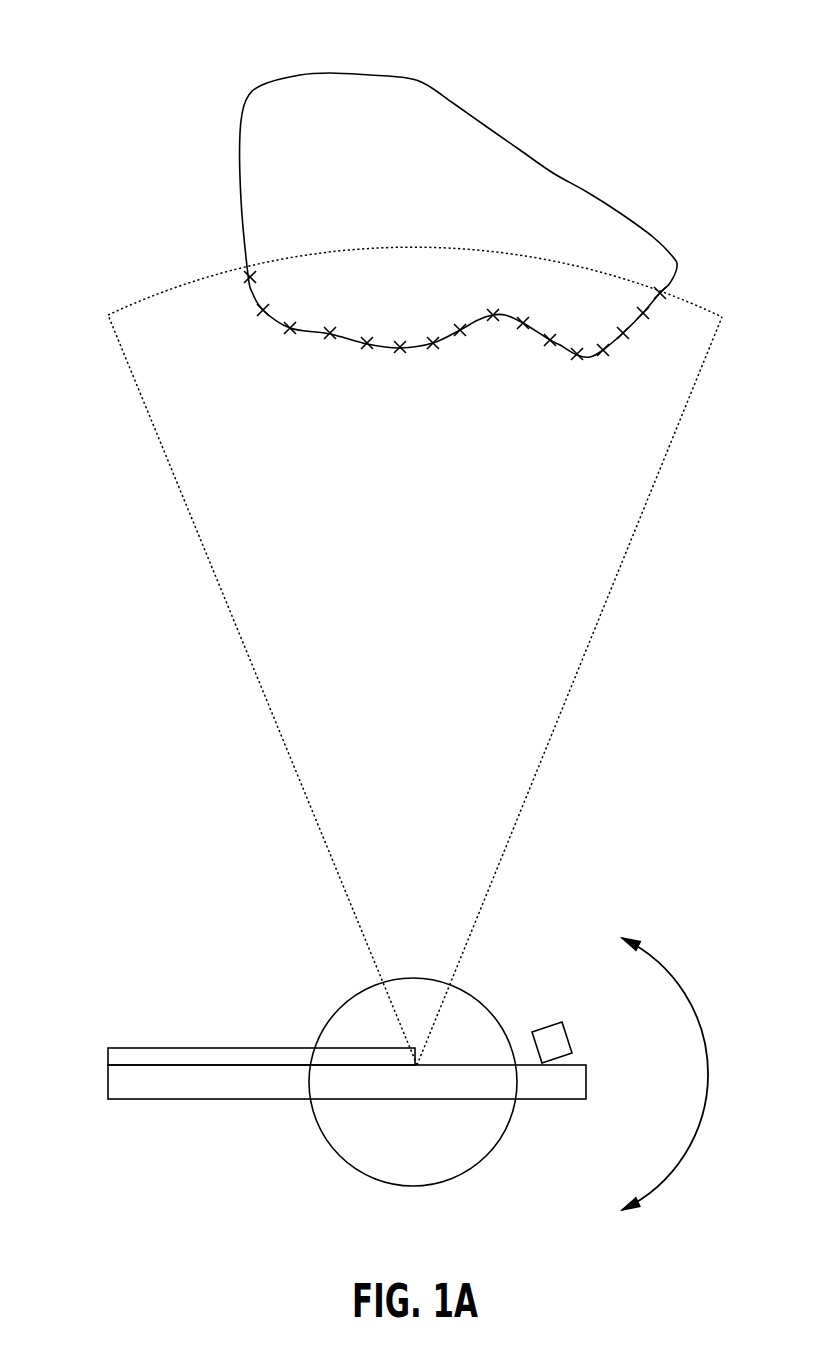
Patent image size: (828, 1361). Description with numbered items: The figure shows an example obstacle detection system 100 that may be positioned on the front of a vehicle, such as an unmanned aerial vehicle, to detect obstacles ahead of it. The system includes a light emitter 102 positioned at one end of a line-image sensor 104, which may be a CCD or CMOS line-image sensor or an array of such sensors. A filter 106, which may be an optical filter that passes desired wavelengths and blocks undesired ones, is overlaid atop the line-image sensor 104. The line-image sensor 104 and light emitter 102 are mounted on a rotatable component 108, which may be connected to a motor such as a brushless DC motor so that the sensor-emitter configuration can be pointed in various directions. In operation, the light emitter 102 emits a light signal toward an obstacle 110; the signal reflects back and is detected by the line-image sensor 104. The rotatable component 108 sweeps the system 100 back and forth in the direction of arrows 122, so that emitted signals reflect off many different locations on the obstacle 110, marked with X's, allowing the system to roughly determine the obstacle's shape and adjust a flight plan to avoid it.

The obstacle detection system 100 is at (268, 916).
The light emitter 102 is at (546, 1025).
The line-image sensor 104 is at (108, 1080).
The filter 106 is at (153, 1048).
The rotatable component 108 is at (313, 1122).
The obstacle 110 is at (402, 76).
The arrows 122 is at (668, 962).